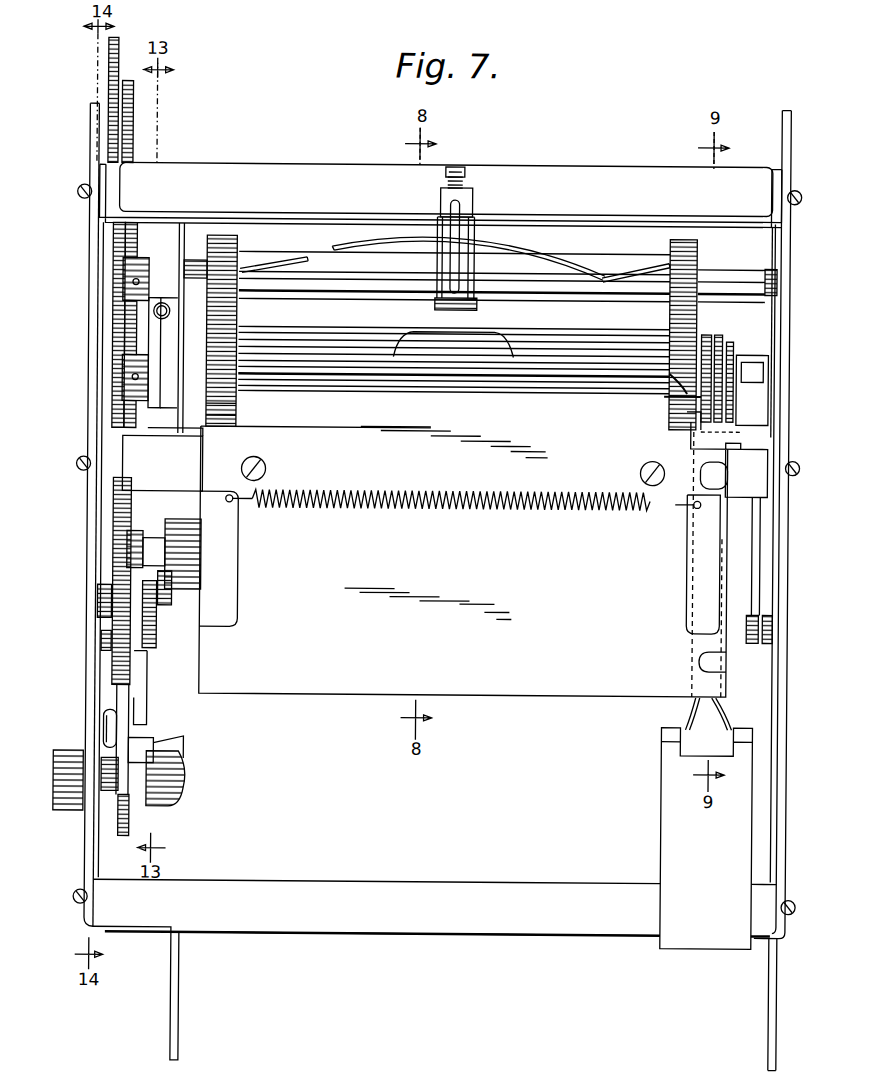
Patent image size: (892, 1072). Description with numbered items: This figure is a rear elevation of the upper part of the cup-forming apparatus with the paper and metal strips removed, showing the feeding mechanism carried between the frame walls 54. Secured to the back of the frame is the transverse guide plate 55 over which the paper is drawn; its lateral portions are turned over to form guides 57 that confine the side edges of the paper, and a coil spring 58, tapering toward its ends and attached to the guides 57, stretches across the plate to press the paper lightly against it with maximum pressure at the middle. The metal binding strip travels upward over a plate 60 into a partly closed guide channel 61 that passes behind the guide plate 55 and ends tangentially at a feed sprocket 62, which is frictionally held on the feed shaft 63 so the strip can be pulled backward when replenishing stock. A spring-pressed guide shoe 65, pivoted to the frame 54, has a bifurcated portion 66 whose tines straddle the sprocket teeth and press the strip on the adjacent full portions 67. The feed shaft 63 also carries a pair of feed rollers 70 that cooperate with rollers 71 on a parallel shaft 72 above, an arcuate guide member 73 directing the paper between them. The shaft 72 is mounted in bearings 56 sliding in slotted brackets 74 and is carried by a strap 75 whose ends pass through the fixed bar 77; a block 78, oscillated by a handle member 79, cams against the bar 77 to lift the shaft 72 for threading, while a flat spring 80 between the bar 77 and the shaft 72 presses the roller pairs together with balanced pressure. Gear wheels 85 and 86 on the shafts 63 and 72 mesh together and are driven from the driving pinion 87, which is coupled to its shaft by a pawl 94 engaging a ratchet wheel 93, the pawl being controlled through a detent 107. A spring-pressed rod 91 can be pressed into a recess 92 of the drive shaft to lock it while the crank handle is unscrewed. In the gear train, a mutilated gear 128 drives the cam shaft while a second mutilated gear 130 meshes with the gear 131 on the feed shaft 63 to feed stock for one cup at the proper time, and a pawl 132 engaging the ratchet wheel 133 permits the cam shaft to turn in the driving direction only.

The frame walls 54 is at (87, 668).
The guide plate 55 is at (354, 696).
The bearings 56 is at (196, 266).
The guides 57 is at (238, 592).
The coil spring 58 is at (462, 514).
The plate 60 is at (668, 796).
The guide channel 61 is at (690, 709).
The feed sprocket 62 is at (717, 393).
The feed shaft 63 is at (670, 382).
The guide shoe 65 is at (718, 433).
The bifurcated portion 66 is at (673, 427).
The full portions 67 is at (668, 397).
The feed rollers 70 is at (236, 423).
The rollers 71 is at (235, 250).
The shaft 72 is at (541, 332).
The arcuate guide member 73 is at (375, 340).
The slotted brackets 74 is at (180, 235).
The strap 75 is at (468, 250).
The bar 77 is at (577, 214).
The block 78 is at (463, 185).
The handle member 79 is at (448, 238).
The flat spring 80 is at (340, 248).
The gear wheel 85 is at (120, 336).
The gear wheel 86 is at (122, 262).
The driving pinion 87 is at (126, 838).
The spring-pressed rod 91 is at (105, 725).
The recess 92 is at (110, 805).
The ratchet wheel 93 is at (160, 822).
The pawl 94 is at (147, 754).
The detent 107 is at (147, 724).
The mutilated gear 128 is at (130, 118).
The mutilated gear 130 is at (116, 42).
The gear 131 is at (112, 408).
The pawl 132 is at (112, 529).
The ratchet wheel 133 is at (98, 604).